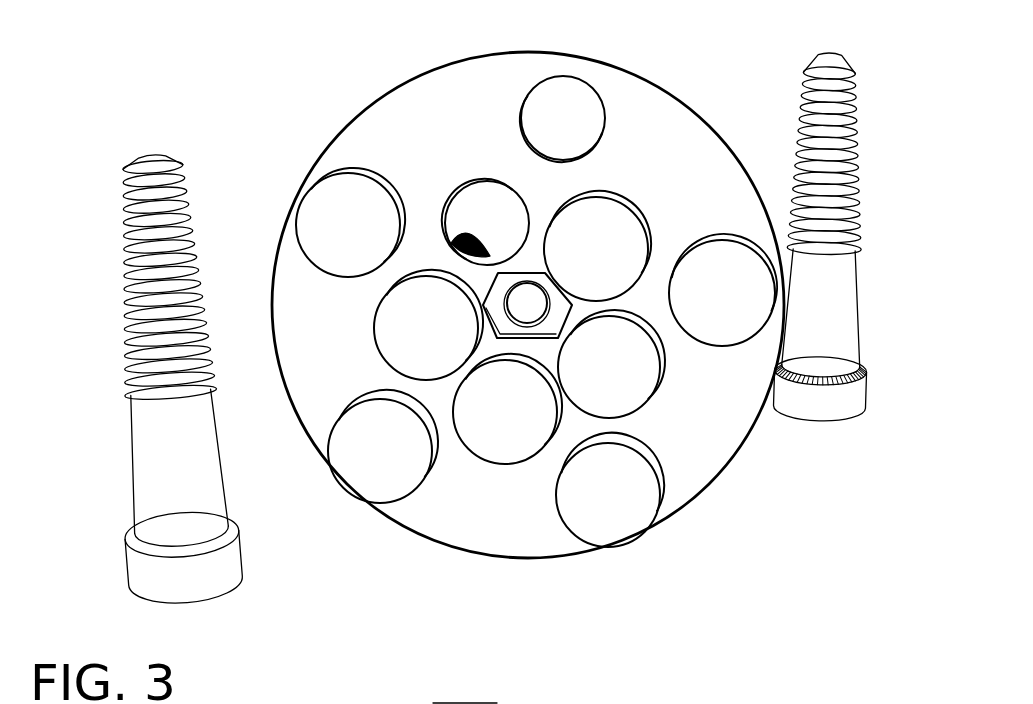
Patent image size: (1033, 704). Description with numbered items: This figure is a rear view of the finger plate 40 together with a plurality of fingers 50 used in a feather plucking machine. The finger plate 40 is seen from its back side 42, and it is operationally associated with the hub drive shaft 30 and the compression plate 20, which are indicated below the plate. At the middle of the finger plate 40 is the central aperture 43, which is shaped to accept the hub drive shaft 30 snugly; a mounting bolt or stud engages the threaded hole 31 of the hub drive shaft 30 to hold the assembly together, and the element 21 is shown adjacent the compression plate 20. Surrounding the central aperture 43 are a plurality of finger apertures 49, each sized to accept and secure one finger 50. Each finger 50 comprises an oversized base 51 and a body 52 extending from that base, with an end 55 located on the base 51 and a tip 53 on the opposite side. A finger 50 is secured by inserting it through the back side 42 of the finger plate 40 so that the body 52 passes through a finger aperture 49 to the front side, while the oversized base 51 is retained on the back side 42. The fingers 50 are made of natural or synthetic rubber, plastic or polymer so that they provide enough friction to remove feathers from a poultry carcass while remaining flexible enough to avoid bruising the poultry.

The finger plate 40 is at (528, 292).
The back side 42 is at (480, 520).
The central aperture 43 is at (505, 306).
The finger apertures 49 is at (570, 93).
The finger 50 is at (438, 333).
The oversized base 51 is at (623, 382).
The body 52 is at (125, 377).
The tip 53 is at (133, 175).
The end 55 is at (138, 565).
The compression plate 20 is at (320, 703).
The base side wall 21 is at (626, 703).
The hub drive shaft 30 is at (506, 703).
The threaded hole 31 is at (403, 703).